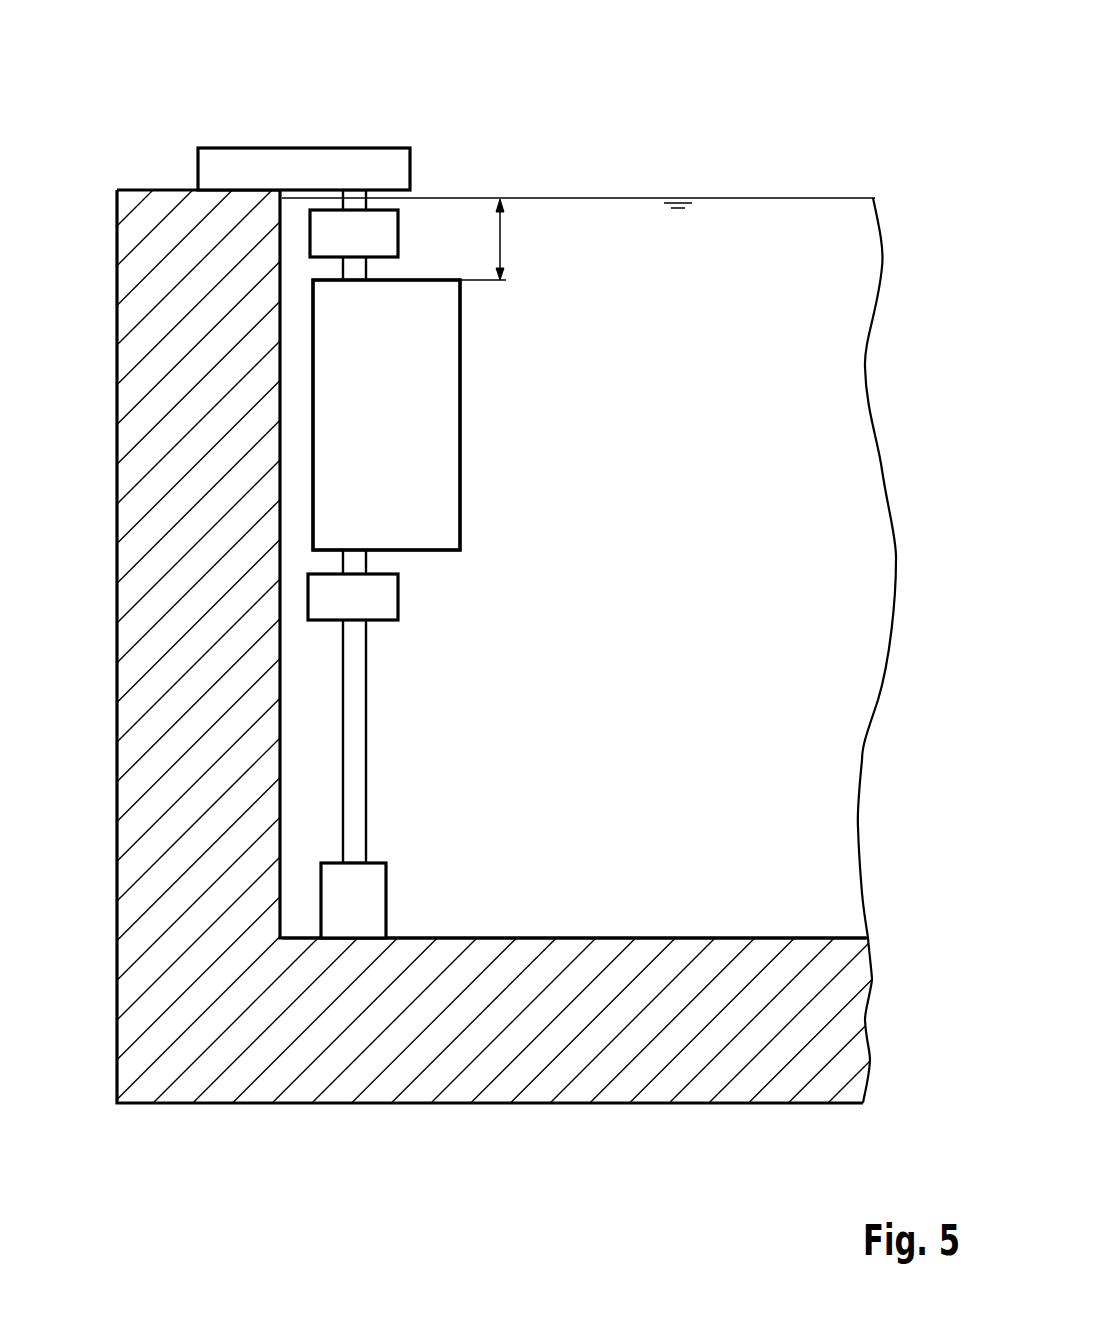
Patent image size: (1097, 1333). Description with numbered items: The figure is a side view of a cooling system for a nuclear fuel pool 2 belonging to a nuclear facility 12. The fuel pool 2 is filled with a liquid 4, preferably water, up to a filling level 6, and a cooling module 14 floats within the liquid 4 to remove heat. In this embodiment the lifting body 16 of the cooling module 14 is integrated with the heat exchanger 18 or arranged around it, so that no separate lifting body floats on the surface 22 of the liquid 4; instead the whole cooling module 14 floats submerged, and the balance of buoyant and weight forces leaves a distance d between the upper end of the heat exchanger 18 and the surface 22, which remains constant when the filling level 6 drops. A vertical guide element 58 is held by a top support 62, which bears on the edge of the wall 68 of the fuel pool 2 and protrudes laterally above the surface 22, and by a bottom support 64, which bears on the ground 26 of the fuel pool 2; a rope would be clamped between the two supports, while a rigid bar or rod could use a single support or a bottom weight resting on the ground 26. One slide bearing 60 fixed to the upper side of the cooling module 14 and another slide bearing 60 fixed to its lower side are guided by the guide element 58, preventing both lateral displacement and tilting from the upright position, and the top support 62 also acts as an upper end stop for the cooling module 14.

The nuclear fuel pool 2 is at (748, 436).
The liquid 4 is at (800, 218).
The filling level 6 is at (680, 197).
The nuclear facility 12 is at (842, 58).
The cooling module 14 is at (588, 365).
The lifting body 16 is at (460, 325).
The heat exchanger 18 is at (460, 385).
The surface 22 is at (530, 198).
The ground 26 is at (685, 938).
The guide element 58 is at (367, 753).
The slide bearing 60 is at (398, 237).
The top support 62 is at (265, 148).
The bottom support 64 is at (386, 900).
The wall 68 is at (130, 553).
The distance d is at (502, 240).